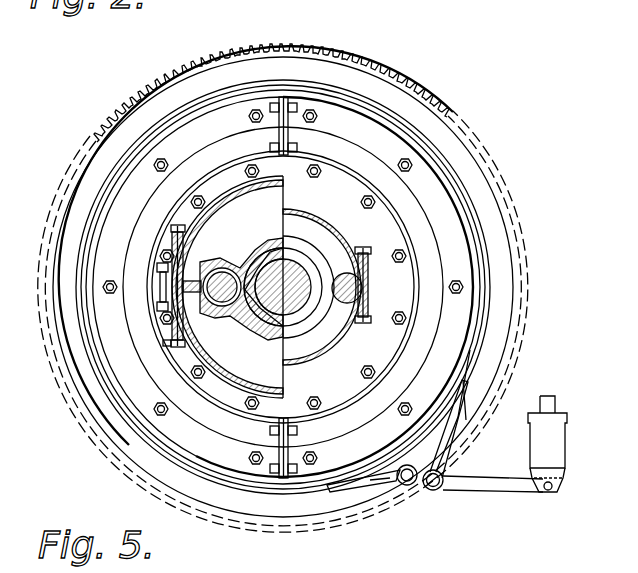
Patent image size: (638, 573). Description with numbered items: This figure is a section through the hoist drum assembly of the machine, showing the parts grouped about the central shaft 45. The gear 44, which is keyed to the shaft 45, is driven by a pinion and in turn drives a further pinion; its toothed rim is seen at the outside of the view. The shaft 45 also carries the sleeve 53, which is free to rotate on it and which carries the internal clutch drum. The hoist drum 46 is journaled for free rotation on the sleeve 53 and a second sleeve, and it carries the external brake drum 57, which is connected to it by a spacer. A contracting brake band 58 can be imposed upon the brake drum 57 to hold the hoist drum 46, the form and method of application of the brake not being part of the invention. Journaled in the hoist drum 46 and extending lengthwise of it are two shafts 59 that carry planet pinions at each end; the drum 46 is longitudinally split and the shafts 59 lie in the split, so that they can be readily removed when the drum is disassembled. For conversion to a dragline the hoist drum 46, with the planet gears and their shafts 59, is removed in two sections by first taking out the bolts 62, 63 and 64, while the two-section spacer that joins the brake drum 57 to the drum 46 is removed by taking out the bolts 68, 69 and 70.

The gear 44 is at (404, 77).
The shaft 45 is at (292, 280).
The hoist drum 46 is at (217, 203).
The sleeve 53 is at (267, 315).
The external brake drum 57 is at (419, 177).
The contracting brake band 58 is at (482, 230).
The shafts 59 is at (220, 300).
The bolts 62 is at (158, 268).
The bolts 63 is at (170, 344).
The bolts 64 is at (368, 248).
The bolts 68 is at (256, 113).
The bolts 69 is at (303, 107).
The bolts 70 is at (252, 168).